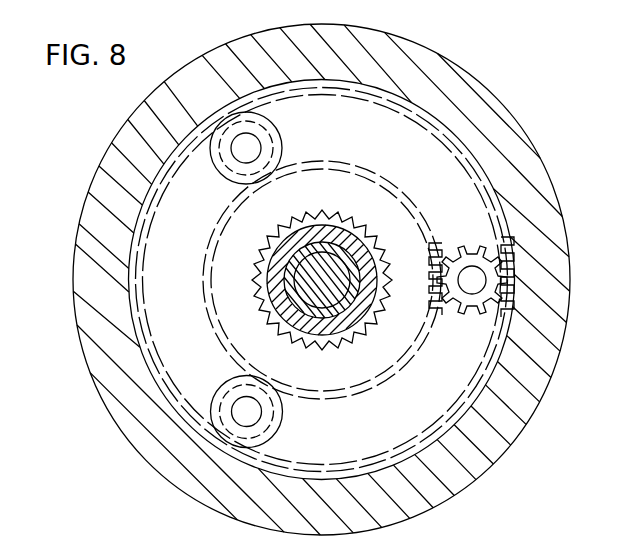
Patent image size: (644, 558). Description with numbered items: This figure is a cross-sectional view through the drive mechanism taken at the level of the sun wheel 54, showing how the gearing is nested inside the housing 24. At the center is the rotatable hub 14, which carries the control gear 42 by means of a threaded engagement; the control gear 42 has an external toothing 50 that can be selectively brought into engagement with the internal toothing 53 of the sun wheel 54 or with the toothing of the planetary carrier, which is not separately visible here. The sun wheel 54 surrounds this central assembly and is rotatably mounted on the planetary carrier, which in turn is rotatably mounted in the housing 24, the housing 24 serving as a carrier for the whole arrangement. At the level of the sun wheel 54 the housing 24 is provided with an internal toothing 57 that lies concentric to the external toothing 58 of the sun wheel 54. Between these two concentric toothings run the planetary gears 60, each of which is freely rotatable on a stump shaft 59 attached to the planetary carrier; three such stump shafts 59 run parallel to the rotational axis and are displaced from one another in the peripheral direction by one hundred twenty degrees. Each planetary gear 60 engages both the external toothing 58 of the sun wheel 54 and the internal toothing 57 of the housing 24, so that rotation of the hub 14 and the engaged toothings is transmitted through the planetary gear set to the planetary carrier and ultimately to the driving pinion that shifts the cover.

The hub 14 is at (330, 260).
The housing 24 is at (93, 283).
The control gear 42 is at (362, 312).
The external toothing 50 is at (307, 296).
The internal toothing 53 is at (333, 349).
The sun wheel 54 is at (230, 306).
The internal toothing 57 is at (512, 263).
The external toothing 58 is at (437, 316).
The stump shaft 59 is at (475, 287).
The planetary gear 60 is at (240, 127).